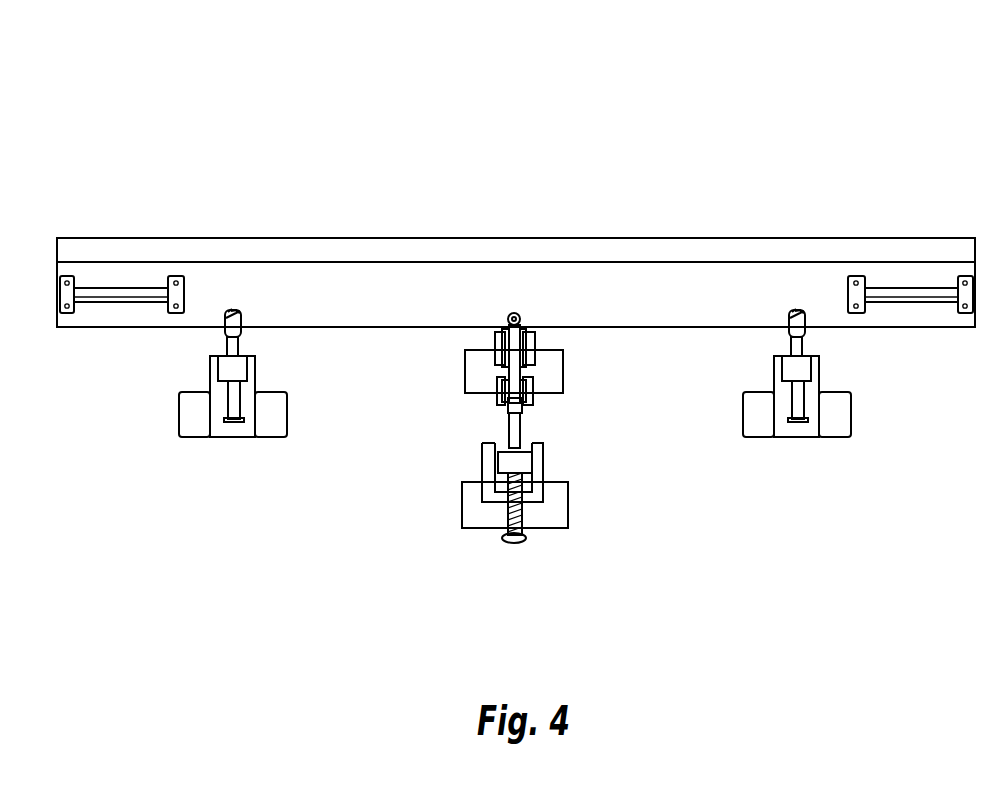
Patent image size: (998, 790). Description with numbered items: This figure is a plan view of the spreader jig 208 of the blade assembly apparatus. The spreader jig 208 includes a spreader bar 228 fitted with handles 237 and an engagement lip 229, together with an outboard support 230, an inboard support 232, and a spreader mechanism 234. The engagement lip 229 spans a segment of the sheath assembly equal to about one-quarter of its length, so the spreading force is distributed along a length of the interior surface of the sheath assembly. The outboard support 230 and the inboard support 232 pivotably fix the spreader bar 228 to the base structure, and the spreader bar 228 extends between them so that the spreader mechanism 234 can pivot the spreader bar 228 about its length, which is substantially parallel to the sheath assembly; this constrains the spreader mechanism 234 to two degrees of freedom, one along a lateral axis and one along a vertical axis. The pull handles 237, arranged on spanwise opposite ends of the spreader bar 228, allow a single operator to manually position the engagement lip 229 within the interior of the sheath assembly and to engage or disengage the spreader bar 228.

The spreader jig 208 is at (180, 134).
The engagement lip 229 is at (338, 243).
The spreader bar 228 is at (325, 303).
The handles 237 is at (106, 296).
The outboard support 230 is at (216, 451).
The inboard support 232 is at (797, 453).
The spreader mechanism 234 is at (588, 450).